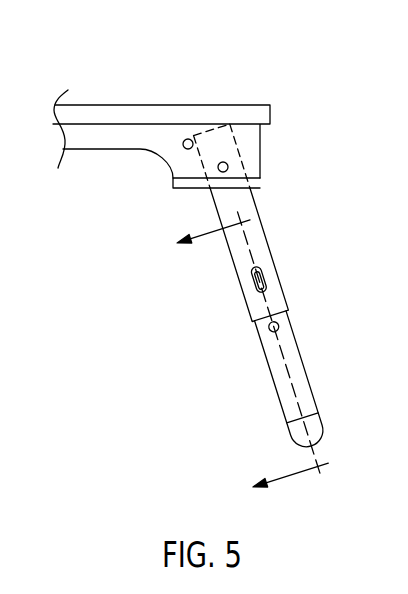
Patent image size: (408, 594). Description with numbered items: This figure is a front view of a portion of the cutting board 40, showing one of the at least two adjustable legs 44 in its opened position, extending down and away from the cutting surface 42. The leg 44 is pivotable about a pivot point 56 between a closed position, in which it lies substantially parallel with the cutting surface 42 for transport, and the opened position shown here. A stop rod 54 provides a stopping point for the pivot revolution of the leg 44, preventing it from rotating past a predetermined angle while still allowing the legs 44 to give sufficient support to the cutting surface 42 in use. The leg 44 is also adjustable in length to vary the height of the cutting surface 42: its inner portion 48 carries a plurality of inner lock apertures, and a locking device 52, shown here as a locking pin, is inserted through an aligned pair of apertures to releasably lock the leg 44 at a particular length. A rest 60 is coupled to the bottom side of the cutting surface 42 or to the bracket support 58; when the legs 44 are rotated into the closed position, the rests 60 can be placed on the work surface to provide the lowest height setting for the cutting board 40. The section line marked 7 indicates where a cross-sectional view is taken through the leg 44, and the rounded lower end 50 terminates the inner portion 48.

The cutting board 40 is at (224, 70).
The cutting surface 42 is at (176, 108).
The adjustable leg 44 is at (192, 354).
The inner portion 48 is at (274, 383).
The rounded end cap 50 is at (294, 444).
The locking device 52 is at (253, 289).
The stop rod 54 is at (183, 146).
The pivot point 56 is at (228, 166).
The bracket support 58 is at (88, 140).
The rest 60 is at (184, 188).
The section line 7- 7 is at (235, 359).